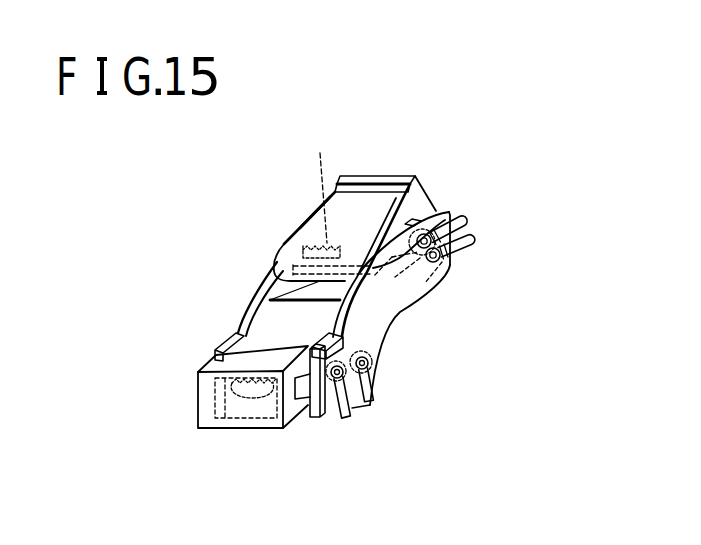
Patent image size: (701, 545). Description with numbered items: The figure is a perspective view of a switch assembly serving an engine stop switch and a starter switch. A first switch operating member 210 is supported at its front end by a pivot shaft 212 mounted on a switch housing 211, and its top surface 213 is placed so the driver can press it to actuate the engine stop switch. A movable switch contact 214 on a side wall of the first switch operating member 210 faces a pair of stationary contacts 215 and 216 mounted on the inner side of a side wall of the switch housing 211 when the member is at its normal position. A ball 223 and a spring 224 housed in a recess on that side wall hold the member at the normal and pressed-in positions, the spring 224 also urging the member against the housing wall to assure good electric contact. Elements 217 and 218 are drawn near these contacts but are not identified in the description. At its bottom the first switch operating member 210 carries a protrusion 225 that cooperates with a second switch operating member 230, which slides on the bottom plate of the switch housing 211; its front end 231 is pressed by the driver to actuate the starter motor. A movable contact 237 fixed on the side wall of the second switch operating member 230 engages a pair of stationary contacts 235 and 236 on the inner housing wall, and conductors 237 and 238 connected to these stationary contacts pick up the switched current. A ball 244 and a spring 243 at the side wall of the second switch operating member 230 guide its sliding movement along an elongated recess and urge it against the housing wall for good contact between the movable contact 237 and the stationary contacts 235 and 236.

The first switch operating member 210 is at (398, 176).
The switch housing 211 is at (263, 276).
The pivot shaft 212 is at (358, 264).
The top surface 213 is at (319, 211).
The movable switch contact 214 is at (452, 270).
The stationary contact 215 is at (430, 213).
The stationary contact 216 is at (452, 264).
The upper pin 217 is at (462, 216).
The lower pin 218 is at (470, 242).
The ball 223 is at (303, 249).
The spring 224 is at (315, 185).
The protrusion 225 is at (420, 262).
The second switch operating member 230 is at (267, 323).
The front end 231 is at (203, 395).
The stationary contact 235 is at (384, 364).
The stationary contact 236 is at (330, 416).
The movable contact 237 is at (373, 400).
The conductor 238 is at (352, 408).
The spring 243 is at (272, 390).
The ball 244 is at (260, 398).